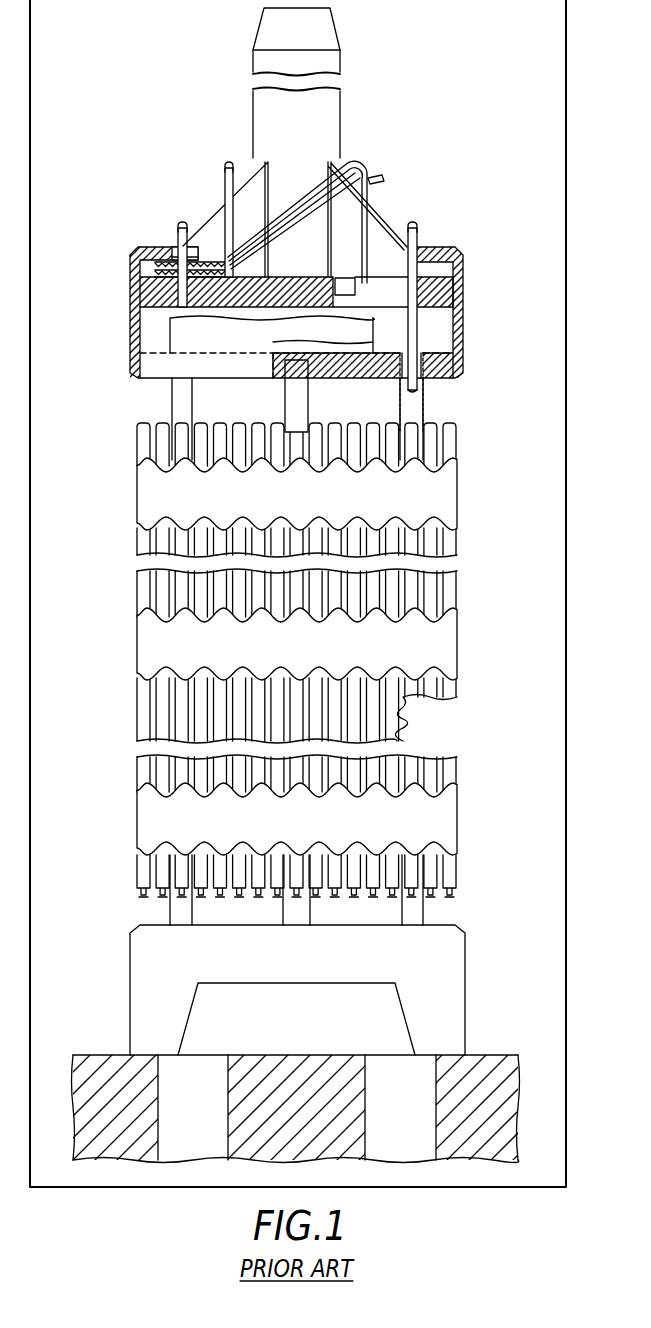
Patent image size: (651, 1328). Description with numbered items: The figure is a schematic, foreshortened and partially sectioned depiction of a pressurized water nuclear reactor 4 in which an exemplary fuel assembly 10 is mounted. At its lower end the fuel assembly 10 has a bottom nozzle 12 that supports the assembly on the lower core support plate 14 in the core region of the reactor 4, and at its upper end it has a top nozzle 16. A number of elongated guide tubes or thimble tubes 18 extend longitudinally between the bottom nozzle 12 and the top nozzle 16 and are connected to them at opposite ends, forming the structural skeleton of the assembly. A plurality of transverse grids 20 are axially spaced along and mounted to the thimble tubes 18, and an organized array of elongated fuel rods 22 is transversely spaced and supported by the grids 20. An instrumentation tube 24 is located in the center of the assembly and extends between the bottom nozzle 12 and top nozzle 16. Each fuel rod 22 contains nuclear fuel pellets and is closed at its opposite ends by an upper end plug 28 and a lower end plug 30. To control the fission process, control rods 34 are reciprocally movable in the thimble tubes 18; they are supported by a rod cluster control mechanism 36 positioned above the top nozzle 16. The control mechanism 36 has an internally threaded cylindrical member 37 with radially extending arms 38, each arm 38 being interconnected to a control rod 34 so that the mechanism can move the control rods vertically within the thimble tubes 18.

The nuclear reactor 4 is at (573, 577).
The fuel assembly 10 is at (460, 563).
The bottom nozzle 12 is at (465, 947).
The lower core support plate 14 is at (503, 1055).
The top nozzle 16 is at (465, 260).
The thimble tubes 18 is at (429, 393).
The transverse grids 20 is at (314, 507).
The fuel rods 22 is at (302, 678).
The instrumentation tube 24 is at (285, 415).
The upper end plug 28 is at (436, 420).
The lower end plug 30 is at (161, 897).
The control rods 34 is at (415, 347).
The rod cluster control mechanism 36 is at (297, 145).
The internally threaded cylindrical member 37 is at (342, 125).
The radially extending arms 38 is at (212, 217).